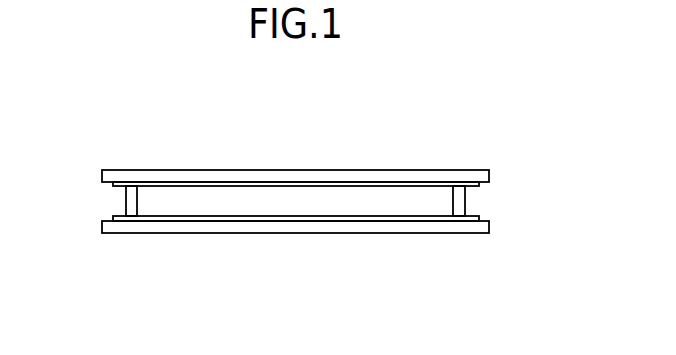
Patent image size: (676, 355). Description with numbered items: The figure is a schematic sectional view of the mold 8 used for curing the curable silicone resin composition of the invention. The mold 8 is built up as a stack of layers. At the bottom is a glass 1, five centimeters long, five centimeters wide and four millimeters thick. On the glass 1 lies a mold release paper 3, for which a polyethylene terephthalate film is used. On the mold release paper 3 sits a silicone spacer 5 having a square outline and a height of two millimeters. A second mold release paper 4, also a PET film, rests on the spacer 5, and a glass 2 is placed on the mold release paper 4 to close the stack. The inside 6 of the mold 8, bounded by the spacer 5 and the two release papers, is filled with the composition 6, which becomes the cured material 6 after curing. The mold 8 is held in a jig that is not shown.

The glass 1 is at (477, 233).
The glass 2 is at (468, 170).
The mold release paper 3 is at (482, 219).
The mold release paper 4 is at (483, 183).
The silicone spacer 5 is at (466, 200).
The inside of the mold 6 is at (345, 199).
The mold 8 is at (172, 113).